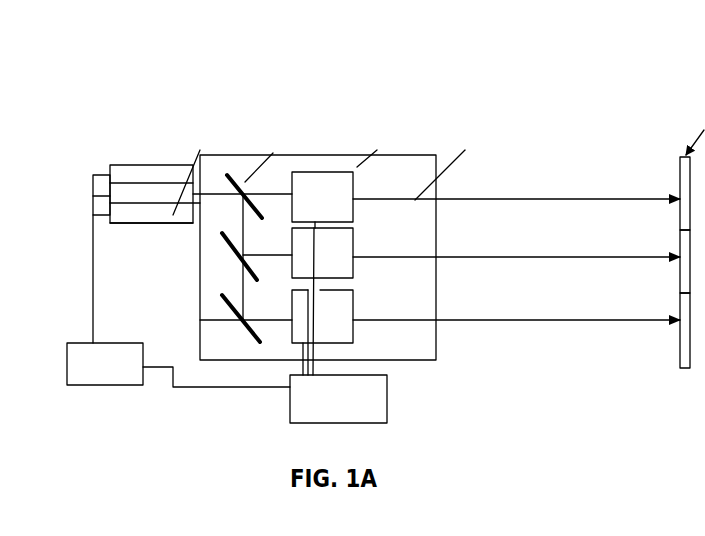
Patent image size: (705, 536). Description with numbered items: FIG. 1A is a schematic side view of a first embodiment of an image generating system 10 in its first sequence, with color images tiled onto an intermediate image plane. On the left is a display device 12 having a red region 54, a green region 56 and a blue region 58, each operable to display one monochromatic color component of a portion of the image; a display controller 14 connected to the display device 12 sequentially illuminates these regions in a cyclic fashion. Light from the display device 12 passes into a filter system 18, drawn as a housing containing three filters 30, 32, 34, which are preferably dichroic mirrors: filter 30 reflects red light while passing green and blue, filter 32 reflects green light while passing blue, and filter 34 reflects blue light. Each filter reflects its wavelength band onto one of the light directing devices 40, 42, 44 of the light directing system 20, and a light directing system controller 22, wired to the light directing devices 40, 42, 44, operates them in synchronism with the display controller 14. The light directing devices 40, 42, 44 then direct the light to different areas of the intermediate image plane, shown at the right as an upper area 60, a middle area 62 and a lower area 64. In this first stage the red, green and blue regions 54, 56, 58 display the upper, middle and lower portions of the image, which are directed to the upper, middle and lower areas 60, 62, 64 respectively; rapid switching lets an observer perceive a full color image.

The image generating system 10 is at (314, 106).
The display device 12 is at (166, 181).
The display controller 14 is at (84, 373).
The filter system 18 is at (260, 155).
The light directing system 20 is at (341, 158).
The light directing system controller 22 is at (375, 395).
The filter 30 is at (233, 205).
The filter 32 is at (235, 262).
The filter 34 is at (227, 320).
The light directing device 40 is at (340, 187).
The light directing device 42 is at (335, 247).
The light directing device 44 is at (342, 302).
The red region 54 is at (158, 173).
The green region 56 is at (170, 193).
The blue region 58 is at (152, 225).
The upper area 60 is at (678, 180).
The middle area 62 is at (678, 243).
The lower area 64 is at (678, 305).